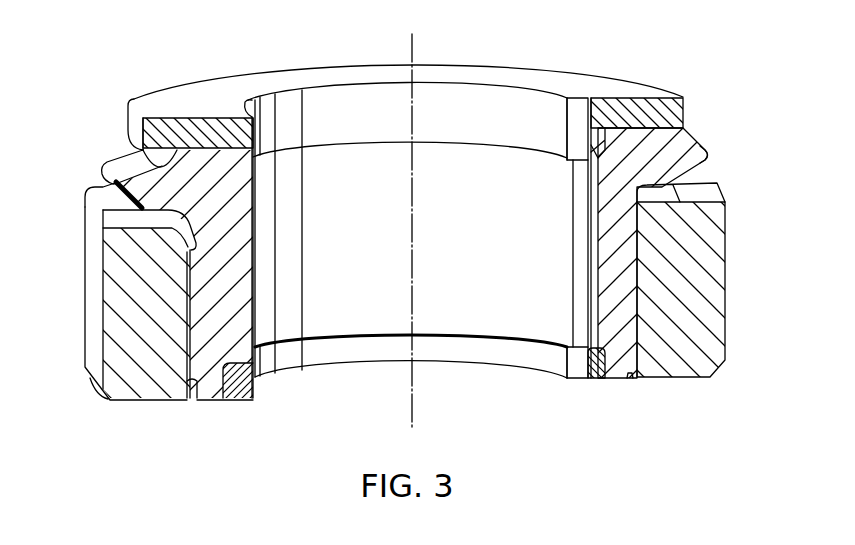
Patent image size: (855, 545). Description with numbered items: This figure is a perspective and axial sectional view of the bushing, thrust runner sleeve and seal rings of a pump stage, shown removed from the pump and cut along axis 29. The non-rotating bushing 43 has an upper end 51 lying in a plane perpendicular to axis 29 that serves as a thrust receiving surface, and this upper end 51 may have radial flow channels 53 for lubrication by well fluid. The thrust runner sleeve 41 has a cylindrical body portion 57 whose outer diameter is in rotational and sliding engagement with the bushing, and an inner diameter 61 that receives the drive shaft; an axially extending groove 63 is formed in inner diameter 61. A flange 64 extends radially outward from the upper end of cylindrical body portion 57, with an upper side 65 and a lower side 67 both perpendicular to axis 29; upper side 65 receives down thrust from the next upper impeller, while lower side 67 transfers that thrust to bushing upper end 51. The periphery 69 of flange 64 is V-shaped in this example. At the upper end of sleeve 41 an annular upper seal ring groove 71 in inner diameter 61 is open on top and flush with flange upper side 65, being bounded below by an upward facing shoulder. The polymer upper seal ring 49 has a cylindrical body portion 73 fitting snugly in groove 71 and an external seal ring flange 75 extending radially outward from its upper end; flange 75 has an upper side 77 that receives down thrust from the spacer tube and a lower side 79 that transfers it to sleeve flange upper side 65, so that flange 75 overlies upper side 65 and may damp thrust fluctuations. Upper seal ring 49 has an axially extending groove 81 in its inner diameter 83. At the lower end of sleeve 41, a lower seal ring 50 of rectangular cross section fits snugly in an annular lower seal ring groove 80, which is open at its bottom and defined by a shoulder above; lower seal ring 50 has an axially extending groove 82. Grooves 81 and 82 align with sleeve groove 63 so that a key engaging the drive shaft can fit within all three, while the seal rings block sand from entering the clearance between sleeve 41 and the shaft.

The axis 29 is at (410, 400).
The thrust runner sleeve 41 is at (197, 267).
The bushing 43 is at (113, 333).
The upper seal ring 49 is at (313, 74).
The lower seal ring 50 is at (255, 380).
The upper end 51 is at (103, 194).
The radial flow channels 53 is at (106, 219).
The cylindrical body portion 57 is at (203, 355).
The inner diameter 61 is at (258, 290).
The axially extending groove 63 is at (578, 237).
The flange 64 is at (684, 135).
The upper side 65 is at (633, 120).
The lower side 67 is at (673, 202).
The periphery 69 is at (709, 155).
The upper seal ring groove 71 is at (665, 183).
The cylindrical body portion 73 is at (260, 167).
The seal ring flange 75 is at (142, 137).
The upper side 77 is at (160, 100).
The lower side 79 is at (174, 161).
The lower seal ring groove 80 is at (598, 379).
The axially extending groove 81 is at (576, 108).
The axially extending groove 82 is at (577, 371).
The inner diameter 83 is at (430, 102).